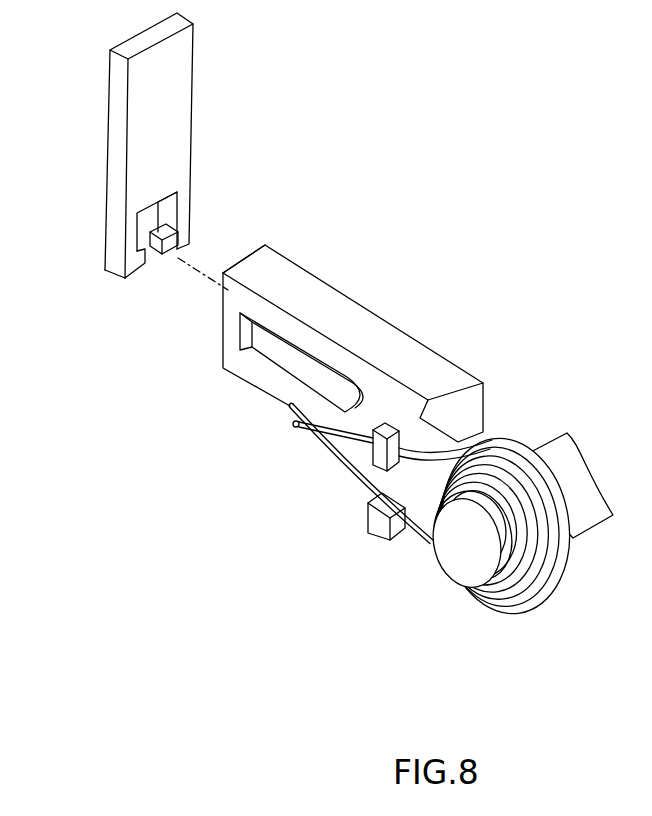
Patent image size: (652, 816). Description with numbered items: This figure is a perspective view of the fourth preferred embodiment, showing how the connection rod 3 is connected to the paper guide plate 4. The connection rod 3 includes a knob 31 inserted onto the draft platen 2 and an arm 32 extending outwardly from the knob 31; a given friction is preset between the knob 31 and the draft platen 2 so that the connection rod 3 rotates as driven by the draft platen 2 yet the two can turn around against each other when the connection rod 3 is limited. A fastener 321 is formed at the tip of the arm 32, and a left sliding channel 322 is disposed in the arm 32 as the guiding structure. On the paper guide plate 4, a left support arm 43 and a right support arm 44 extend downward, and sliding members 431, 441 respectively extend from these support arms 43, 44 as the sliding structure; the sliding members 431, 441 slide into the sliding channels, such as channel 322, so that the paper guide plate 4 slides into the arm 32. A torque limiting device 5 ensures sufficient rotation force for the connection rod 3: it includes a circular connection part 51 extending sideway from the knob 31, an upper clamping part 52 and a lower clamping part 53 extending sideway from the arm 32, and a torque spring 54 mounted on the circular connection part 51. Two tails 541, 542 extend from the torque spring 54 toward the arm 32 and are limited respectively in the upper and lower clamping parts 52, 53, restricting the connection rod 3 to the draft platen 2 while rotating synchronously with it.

The draft platen 2 is at (455, 562).
The connection rod 3 is at (527, 388).
The knob 31 is at (562, 558).
The arm 32 is at (323, 297).
The fastener 321 is at (255, 305).
The left sliding channel 322 is at (263, 358).
The paper guide plate 4 is at (205, 103).
The left support arm 43 is at (112, 238).
The sliding member 431 is at (142, 266).
The right support arm 44 is at (186, 209).
The sliding member 441 is at (187, 237).
The torque limiting device 5 is at (512, 570).
The circular connection part 51 is at (503, 585).
The upper clamping part 52 is at (377, 428).
The lower clamping part 53 is at (378, 523).
The torque spring 54 is at (540, 563).
The tail 541 is at (288, 408).
The tail 542 is at (293, 425).